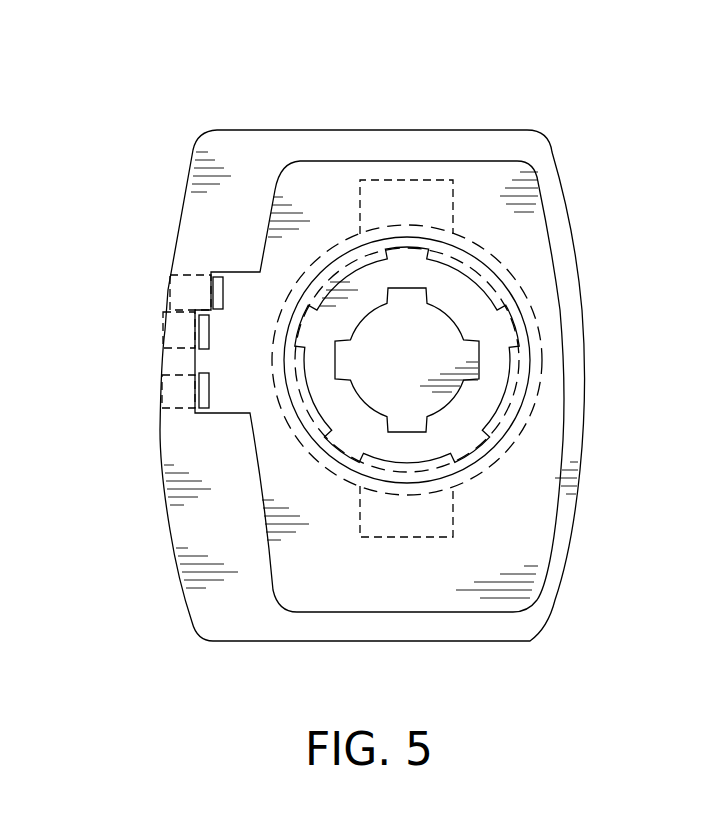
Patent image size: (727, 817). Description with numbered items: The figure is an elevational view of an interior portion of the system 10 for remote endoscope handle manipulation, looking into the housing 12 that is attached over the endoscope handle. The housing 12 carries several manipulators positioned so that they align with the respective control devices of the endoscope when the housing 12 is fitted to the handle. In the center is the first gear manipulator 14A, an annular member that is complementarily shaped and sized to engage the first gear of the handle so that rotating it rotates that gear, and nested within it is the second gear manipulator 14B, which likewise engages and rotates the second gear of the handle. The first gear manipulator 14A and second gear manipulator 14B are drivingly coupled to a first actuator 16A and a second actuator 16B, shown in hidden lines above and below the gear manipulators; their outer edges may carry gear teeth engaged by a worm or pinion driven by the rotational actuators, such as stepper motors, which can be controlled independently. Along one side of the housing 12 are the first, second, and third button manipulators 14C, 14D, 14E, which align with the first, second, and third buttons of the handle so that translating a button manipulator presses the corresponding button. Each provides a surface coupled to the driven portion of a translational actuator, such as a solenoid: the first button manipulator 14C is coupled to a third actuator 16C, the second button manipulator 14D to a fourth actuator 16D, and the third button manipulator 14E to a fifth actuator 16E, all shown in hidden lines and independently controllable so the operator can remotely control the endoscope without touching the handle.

The system for remote endoscope handle manipulation 10 is at (532, 84).
The housing 12 is at (543, 132).
The first gear manipulator 14A is at (495, 293).
The second gear manipulator 14B is at (475, 405).
The first button manipulator 14C is at (204, 325).
The second button manipulator 14D is at (203, 383).
The third button manipulator 14E is at (218, 277).
The first actuator 16A is at (426, 178).
The second actuator 16B is at (455, 512).
The third actuator 16C is at (178, 335).
The fourth actuator 16D is at (167, 390).
The fifth actuator 16E is at (173, 292).